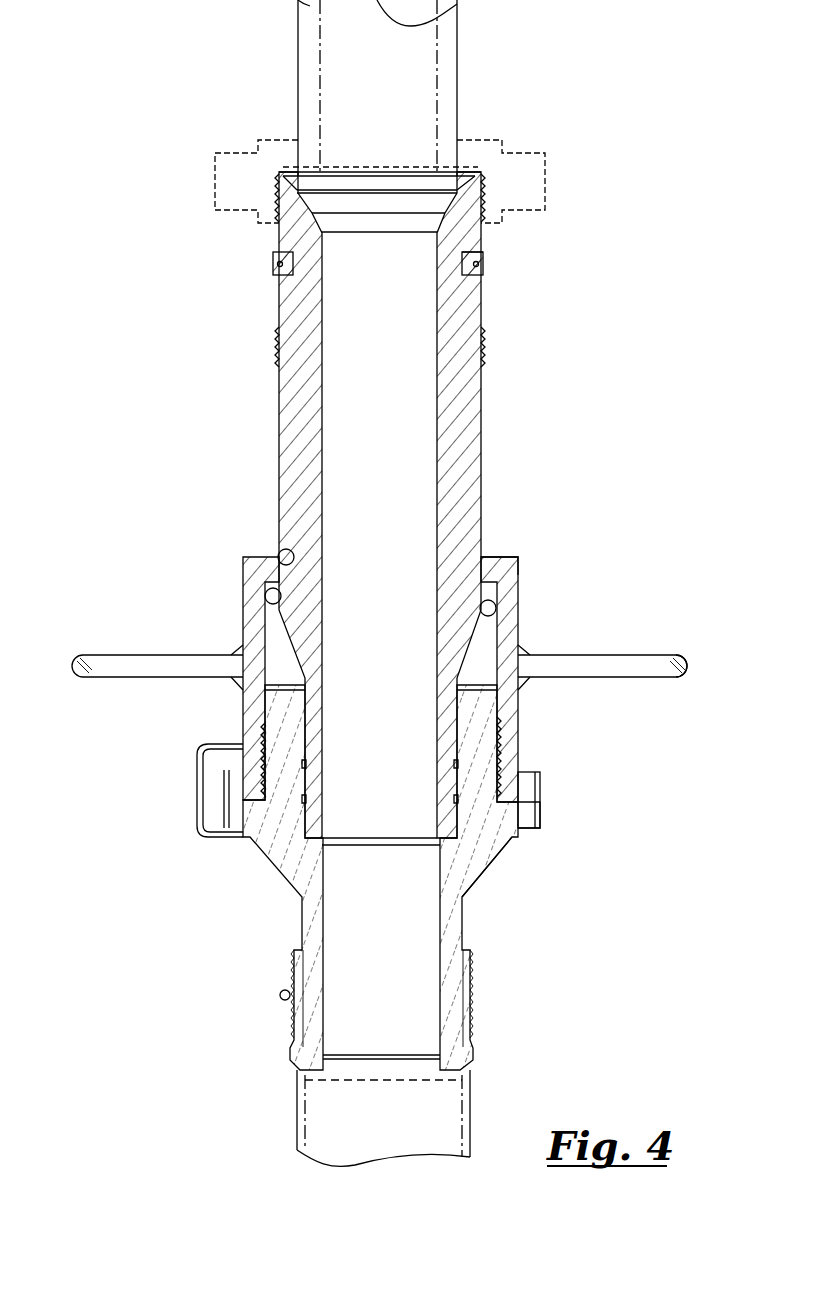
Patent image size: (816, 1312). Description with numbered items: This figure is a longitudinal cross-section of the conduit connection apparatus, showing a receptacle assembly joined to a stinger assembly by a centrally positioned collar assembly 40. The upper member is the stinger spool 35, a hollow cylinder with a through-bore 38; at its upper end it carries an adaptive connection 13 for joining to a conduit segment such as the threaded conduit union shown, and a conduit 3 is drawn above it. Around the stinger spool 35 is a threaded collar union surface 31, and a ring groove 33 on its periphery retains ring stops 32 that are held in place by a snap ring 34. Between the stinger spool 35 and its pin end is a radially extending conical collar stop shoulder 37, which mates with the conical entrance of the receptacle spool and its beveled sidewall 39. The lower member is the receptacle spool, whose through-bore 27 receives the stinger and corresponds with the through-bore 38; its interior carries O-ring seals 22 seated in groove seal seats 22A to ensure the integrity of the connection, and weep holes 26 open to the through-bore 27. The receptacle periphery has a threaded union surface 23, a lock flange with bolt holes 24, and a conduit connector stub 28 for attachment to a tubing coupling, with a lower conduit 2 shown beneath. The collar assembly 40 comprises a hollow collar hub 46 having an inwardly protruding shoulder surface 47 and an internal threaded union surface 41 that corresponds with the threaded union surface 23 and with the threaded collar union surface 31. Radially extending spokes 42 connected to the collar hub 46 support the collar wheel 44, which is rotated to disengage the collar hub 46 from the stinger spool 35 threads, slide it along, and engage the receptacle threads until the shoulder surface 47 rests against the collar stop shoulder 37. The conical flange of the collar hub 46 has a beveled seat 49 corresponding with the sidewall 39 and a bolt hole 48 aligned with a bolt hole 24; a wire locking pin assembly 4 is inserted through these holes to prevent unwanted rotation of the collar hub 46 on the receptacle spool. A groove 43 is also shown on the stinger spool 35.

The lower pipe 2 is at (297, 1093).
The upper pipe 3 is at (450, 103).
The wire locking pin assembly 4 is at (225, 770).
The adaptive connection 13 is at (278, 192).
The O-ring seals 22 is at (335, 786).
The groove seal seats 22A is at (452, 795).
The threaded union surface 23 is at (262, 752).
The bolt holes 24 is at (532, 831).
The weep holes 26 is at (240, 655).
The through-bore 27 is at (398, 933).
The conduit connector stub 28 is at (455, 1048).
The threaded collar union surface 31 is at (483, 346).
The retaining ring stops 32 is at (482, 260).
The ring groove 33 is at (284, 276).
The snap ring 34 is at (485, 268).
The stinger spool 35 is at (290, 442).
The collar stop shoulder 37 is at (492, 565).
The through-bore 38 is at (395, 483).
The beveled sidewall 39 is at (500, 641).
The collar assembly 40 is at (533, 706).
The internal threaded union surface 41 is at (262, 735).
The spokes 42 is at (630, 660).
The retaining groove 43 is at (285, 562).
The collar wheel 44 is at (688, 668).
The collar hub 46 is at (520, 732).
The shoulder surface 47 is at (266, 600).
The bolt hole 48 is at (532, 780).
The beveled edge or seat 49 is at (503, 607).